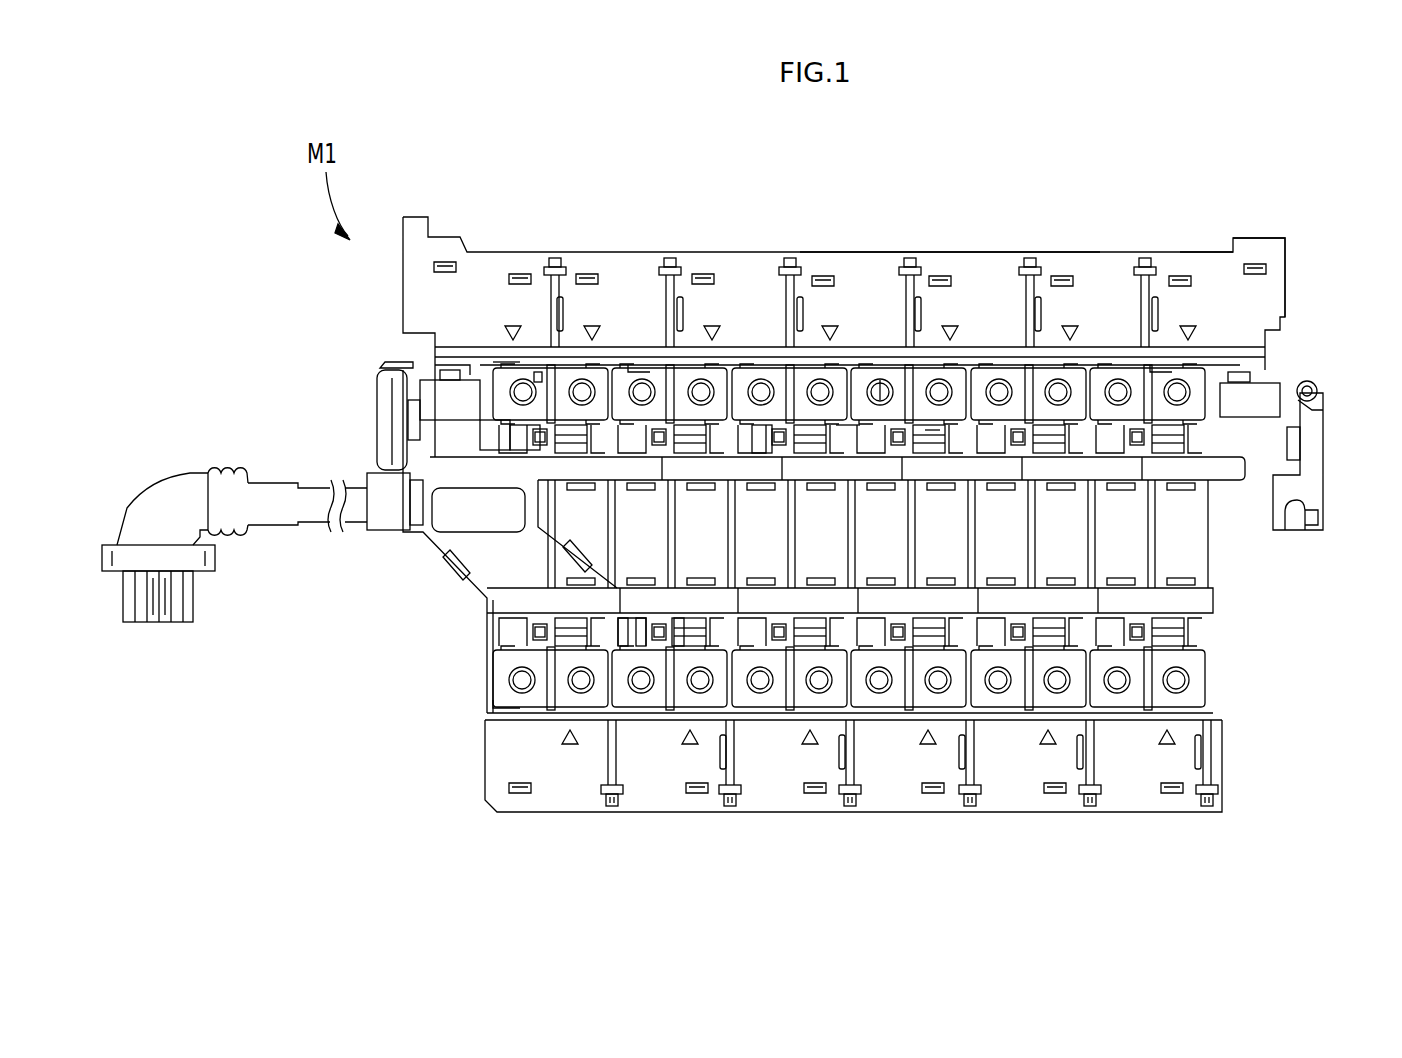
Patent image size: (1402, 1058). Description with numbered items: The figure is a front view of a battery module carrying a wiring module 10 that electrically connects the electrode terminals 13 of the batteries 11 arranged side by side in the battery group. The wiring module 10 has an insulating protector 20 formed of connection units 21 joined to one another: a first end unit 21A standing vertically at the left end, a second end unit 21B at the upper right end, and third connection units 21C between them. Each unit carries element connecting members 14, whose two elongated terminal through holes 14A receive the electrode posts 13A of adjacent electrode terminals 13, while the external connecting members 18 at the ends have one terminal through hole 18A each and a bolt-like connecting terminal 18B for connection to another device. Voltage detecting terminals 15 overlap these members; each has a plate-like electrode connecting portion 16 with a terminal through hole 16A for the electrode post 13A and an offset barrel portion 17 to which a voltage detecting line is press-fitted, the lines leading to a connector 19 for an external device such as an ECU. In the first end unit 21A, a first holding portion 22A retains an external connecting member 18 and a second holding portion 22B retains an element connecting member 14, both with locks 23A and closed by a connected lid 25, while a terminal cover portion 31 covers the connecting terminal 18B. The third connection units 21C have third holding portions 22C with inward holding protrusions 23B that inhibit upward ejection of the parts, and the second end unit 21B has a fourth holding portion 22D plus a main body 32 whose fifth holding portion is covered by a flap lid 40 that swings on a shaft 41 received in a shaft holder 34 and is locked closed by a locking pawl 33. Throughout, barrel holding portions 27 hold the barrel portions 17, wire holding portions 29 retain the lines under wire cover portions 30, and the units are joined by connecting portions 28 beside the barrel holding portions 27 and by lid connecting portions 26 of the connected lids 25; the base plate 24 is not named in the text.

The wiring module 10 is at (852, 250).
The battery 11 is at (1180, 545).
The electrode terminal 13 is at (1175, 703).
The electrode post 13A is at (757, 385).
The element connecting member 14 is at (642, 702).
The terminal through hole 14A is at (623, 706).
The voltage detecting terminal 15 is at (538, 373).
The electrode connecting portion 16 is at (755, 720).
The terminal through hole 16A is at (677, 714).
The barrel portion 17 is at (673, 648).
The external connecting member 18 is at (420, 380).
The terminal through hole 18A is at (1190, 363).
The connecting terminal 18B is at (403, 408).
The connector 19 is at (110, 545).
The insulating protector 20 is at (930, 250).
The connection unit 21 is at (844, 337).
The first end unit 21A is at (435, 550).
The second end unit 21B is at (1262, 237).
The third connection unit 21C is at (998, 250).
The first holding portion 22A is at (430, 368).
The second holding portion 22B is at (520, 703).
The third holding portion 22C is at (637, 357).
The fourth holding portion 22D is at (1165, 370).
The lock 23A is at (503, 363).
The holding protrusion 23B is at (843, 363).
The base plate 24 is at (828, 355).
The connected lid 25 is at (442, 258).
The lid connecting portion 26 is at (555, 257).
The barrel holding portion 27 is at (887, 387).
The connecting portion 28 is at (933, 437).
The wire holding portion 29 is at (1215, 618).
The wire cover portion 30 is at (1210, 472).
The terminal cover portion 31 is at (385, 440).
The main body 32 is at (1305, 385).
The locking pawl 33 is at (1312, 518).
The shaft holder 34 is at (1316, 392).
The flap lid 40 is at (1315, 470).
The shaft 41 is at (1312, 403).